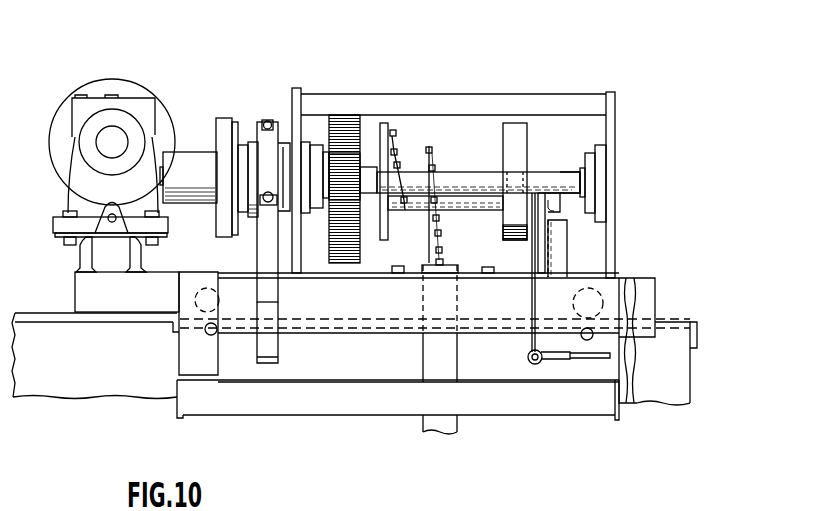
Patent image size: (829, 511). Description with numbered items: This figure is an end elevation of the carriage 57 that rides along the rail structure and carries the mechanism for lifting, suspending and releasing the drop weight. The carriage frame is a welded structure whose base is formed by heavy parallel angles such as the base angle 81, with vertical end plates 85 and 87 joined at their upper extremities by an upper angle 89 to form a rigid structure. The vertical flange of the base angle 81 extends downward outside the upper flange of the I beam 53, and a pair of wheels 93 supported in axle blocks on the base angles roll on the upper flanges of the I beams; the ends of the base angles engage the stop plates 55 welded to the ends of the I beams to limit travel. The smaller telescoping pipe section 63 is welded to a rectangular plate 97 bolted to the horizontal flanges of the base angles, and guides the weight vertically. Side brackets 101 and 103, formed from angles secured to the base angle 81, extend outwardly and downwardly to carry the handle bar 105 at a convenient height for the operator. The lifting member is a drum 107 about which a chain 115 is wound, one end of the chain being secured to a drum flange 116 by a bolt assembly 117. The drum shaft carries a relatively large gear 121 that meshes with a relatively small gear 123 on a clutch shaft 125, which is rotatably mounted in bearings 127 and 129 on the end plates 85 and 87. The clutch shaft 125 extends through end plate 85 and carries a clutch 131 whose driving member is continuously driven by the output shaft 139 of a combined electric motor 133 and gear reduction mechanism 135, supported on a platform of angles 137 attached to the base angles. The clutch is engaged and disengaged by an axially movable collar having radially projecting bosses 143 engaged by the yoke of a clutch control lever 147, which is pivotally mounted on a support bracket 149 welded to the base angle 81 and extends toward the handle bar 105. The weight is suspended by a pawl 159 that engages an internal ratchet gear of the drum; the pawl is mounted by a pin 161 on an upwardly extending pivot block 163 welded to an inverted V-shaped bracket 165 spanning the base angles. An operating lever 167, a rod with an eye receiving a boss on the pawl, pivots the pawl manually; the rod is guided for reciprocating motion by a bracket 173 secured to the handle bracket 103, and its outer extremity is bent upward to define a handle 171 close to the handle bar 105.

The electric motor 133 is at (120, 85).
The gear reduction mechanism 135 is at (72, 185).
The angles 137 is at (130, 263).
The output shaft 139 is at (162, 175).
The clutch 131 is at (223, 122).
The support bracket 149 is at (257, 255).
The bosses 143 is at (265, 120).
The clutch control lever 147 is at (270, 300).
The vertical end plate 85 is at (292, 100).
The upper angle 89 is at (567, 105).
The vertical end plate 87 is at (615, 130).
The bearing 127 is at (318, 157).
The gear 121 is at (350, 127).
The gear 123 is at (342, 187).
The drum 107 is at (467, 162).
The clutch shaft 125 is at (565, 177).
The pawl 159 is at (530, 170).
The bearing 129 is at (602, 193).
The drum flange 116 is at (388, 225).
The bolt assembly 117 is at (396, 133).
The chain 115 is at (442, 233).
The rectangular plate 97 is at (485, 275).
The pivot block 163 is at (538, 240).
The pin 161 is at (548, 203).
The inverted V-shaped bracket 165 is at (560, 257).
The operating lever 167 is at (532, 310).
The handle 171 is at (530, 345).
The bracket 173 is at (570, 360).
The carriage 57 is at (68, 286).
The side bracket 101 is at (182, 353).
The base angle 81 is at (370, 307).
The wheels 93 is at (222, 300).
The pipe section 63 is at (447, 353).
The I beam 53 is at (102, 382).
The handle bar 105 is at (363, 398).
The side bracket 103 is at (619, 413).
The plates or straps 55 is at (697, 335).